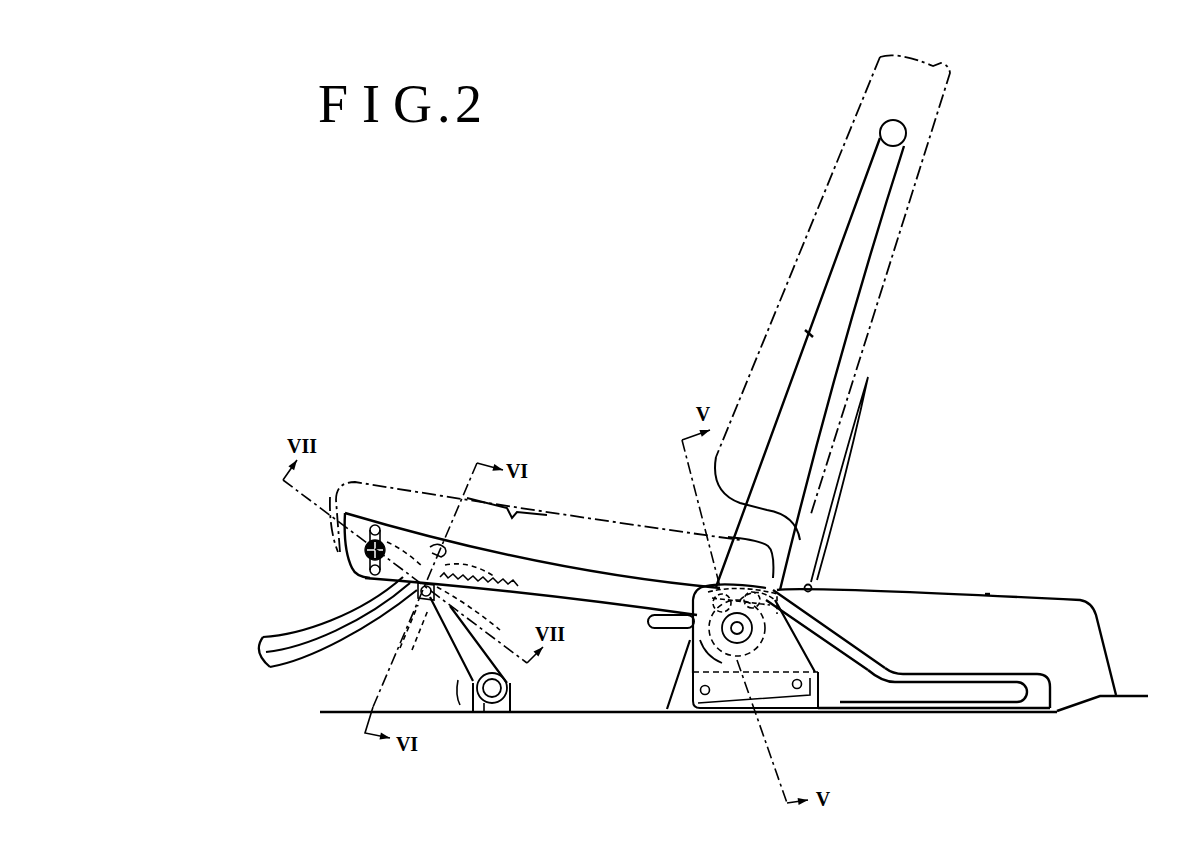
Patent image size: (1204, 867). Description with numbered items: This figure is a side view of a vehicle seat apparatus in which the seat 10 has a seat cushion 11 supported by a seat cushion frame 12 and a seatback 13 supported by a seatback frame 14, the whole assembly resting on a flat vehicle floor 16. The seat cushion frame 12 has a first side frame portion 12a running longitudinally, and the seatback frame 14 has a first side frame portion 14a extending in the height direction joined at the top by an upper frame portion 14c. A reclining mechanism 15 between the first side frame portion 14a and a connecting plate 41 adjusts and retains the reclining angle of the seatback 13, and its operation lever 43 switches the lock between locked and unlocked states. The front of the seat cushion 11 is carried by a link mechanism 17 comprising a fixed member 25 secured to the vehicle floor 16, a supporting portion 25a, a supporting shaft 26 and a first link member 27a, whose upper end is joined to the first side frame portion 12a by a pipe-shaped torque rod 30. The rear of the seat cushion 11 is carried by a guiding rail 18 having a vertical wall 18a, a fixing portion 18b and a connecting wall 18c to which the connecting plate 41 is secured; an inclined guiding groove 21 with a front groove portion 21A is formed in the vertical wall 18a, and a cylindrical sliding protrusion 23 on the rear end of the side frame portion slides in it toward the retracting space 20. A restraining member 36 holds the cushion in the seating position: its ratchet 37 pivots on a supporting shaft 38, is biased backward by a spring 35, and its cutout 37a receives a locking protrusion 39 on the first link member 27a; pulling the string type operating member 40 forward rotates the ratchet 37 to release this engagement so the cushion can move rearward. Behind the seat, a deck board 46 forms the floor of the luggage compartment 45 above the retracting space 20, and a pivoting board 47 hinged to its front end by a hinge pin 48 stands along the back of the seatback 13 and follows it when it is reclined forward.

The seat 10 is at (673, 337).
The seat cushion 11 is at (617, 535).
The seat cushion frame 12 is at (547, 556).
The first side frame portion 12a is at (581, 590).
The seatback 13 is at (807, 250).
The seatback frame 14 is at (887, 203).
The first side frame portion 14a is at (814, 336).
The upper frame portion 14c is at (898, 122).
The reclining mechanism 15 is at (737, 662).
The vehicle floor 16 is at (602, 711).
The link mechanism 17 is at (456, 654).
The guiding rail 18 is at (930, 673).
The vertical wall 18a is at (838, 690).
The fixing portion 18b is at (1027, 677).
The connecting wall 18c is at (713, 712).
The retracting space 20 is at (917, 598).
The guiding groove 21 is at (837, 630).
The front groove portion 21A is at (755, 597).
The sliding protrusion 23 is at (717, 587).
The fixed member 25 is at (510, 698).
The supporting portion 25a is at (485, 707).
The supporting shaft 26 is at (498, 707).
The first link member 27a is at (463, 675).
The torque rod 30 is at (363, 553).
The spring 35 is at (477, 573).
The restraining member 36 is at (425, 611).
The ratchet 37 is at (420, 563).
The cutout 37a is at (437, 587).
The supporting shaft 38 is at (433, 547).
The locking protrusion 39 is at (412, 617).
The operating member 40 is at (263, 637).
The connecting plate 41 is at (780, 683).
The operation lever 43 is at (660, 629).
The luggage compartment 45 is at (990, 457).
The deck board 46 is at (987, 593).
The pivoting board 47 is at (853, 440).
The hinge pin 48 is at (813, 573).